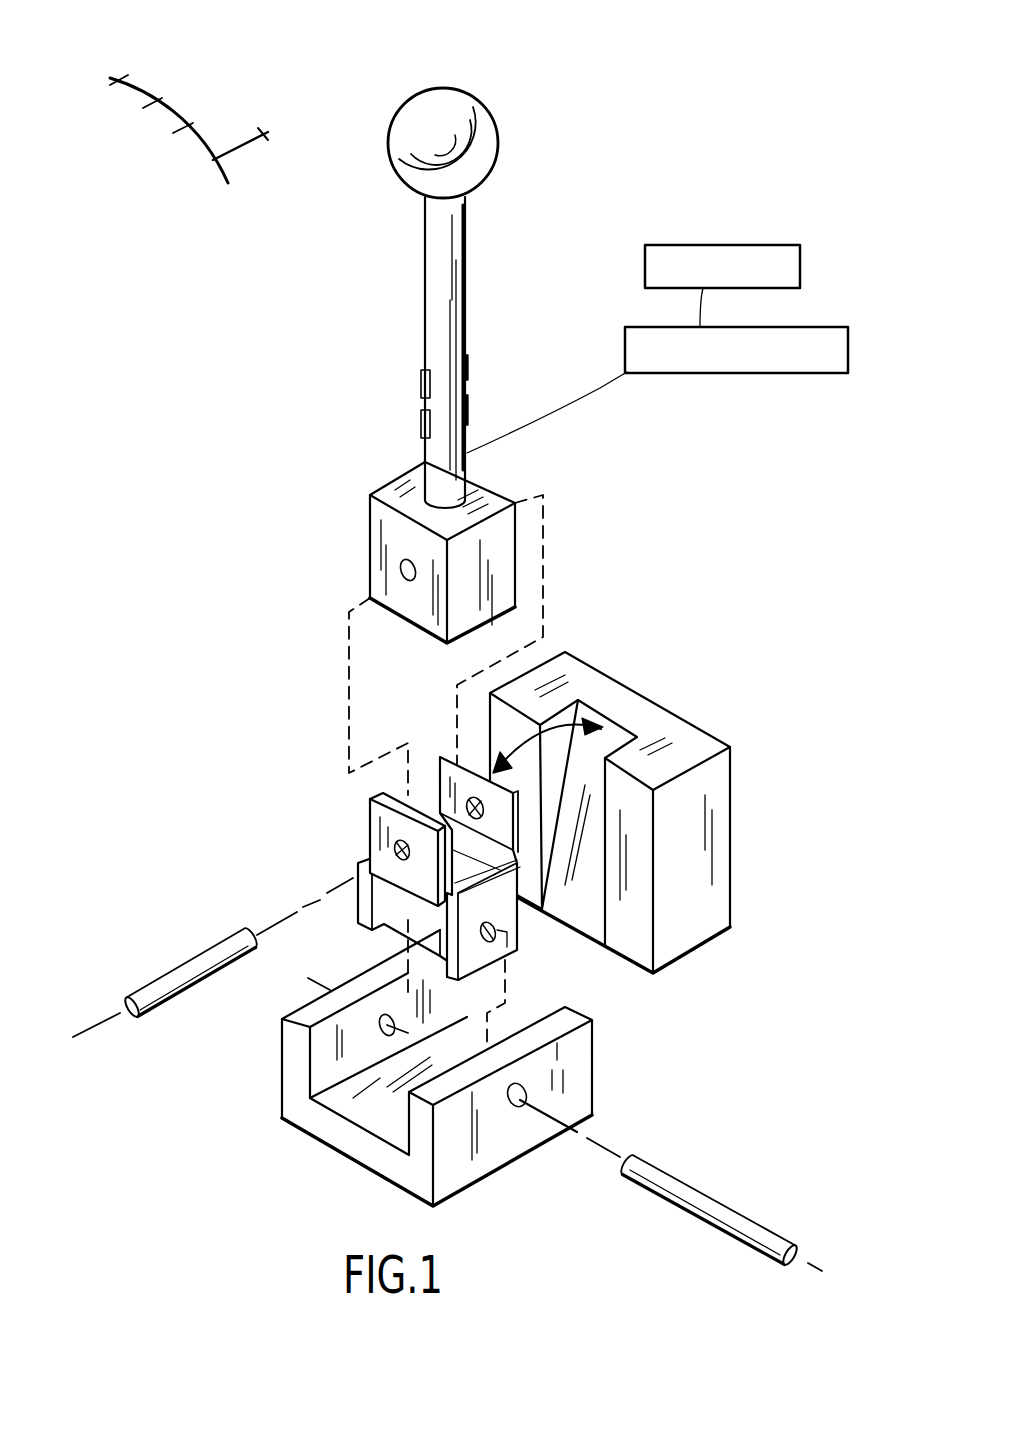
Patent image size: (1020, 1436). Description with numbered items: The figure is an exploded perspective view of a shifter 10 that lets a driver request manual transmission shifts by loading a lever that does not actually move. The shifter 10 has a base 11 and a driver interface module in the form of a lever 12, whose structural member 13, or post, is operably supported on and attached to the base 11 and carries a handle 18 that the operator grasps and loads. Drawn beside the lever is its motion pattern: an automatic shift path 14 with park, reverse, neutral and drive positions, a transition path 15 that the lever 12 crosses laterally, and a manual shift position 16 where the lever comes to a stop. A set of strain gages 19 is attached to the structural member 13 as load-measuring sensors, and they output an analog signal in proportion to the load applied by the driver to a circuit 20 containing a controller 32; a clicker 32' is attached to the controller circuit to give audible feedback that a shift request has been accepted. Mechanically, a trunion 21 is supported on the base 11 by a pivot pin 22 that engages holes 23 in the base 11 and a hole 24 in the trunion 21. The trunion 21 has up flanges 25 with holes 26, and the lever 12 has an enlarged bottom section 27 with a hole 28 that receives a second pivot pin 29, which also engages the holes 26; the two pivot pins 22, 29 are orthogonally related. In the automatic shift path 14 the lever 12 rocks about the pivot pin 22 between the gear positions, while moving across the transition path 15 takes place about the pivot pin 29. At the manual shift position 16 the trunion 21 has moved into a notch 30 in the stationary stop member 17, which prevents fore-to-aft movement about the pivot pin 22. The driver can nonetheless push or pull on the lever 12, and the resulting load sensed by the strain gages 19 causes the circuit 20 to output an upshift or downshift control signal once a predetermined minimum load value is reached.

The shifter 10 is at (232, 530).
The base 11 is at (494, 1083).
The lever 12 is at (455, 260).
The structural member 13 is at (467, 272).
The automatic shift path 14 is at (198, 91).
The transition path 15 is at (237, 143).
The manual shift position 16 is at (263, 136).
The stop member 17 is at (614, 753).
The handle 18 is at (425, 95).
The strain gages 19 is at (421, 418).
The circuit 20 is at (657, 298).
The trunion 21 is at (348, 913).
The pivot pin 22 is at (702, 1188).
The holes 23 is at (519, 1108).
The hole 24 is at (520, 930).
The up flanges 25 is at (396, 852).
The holes 26 is at (339, 833).
The enlarged bottom section 27 is at (464, 539).
The hole 28 is at (402, 565).
The pivot pin 29 is at (180, 962).
The notch 30 is at (617, 735).
The controller 32 is at (736, 402).
The clicker 32' is at (735, 203).